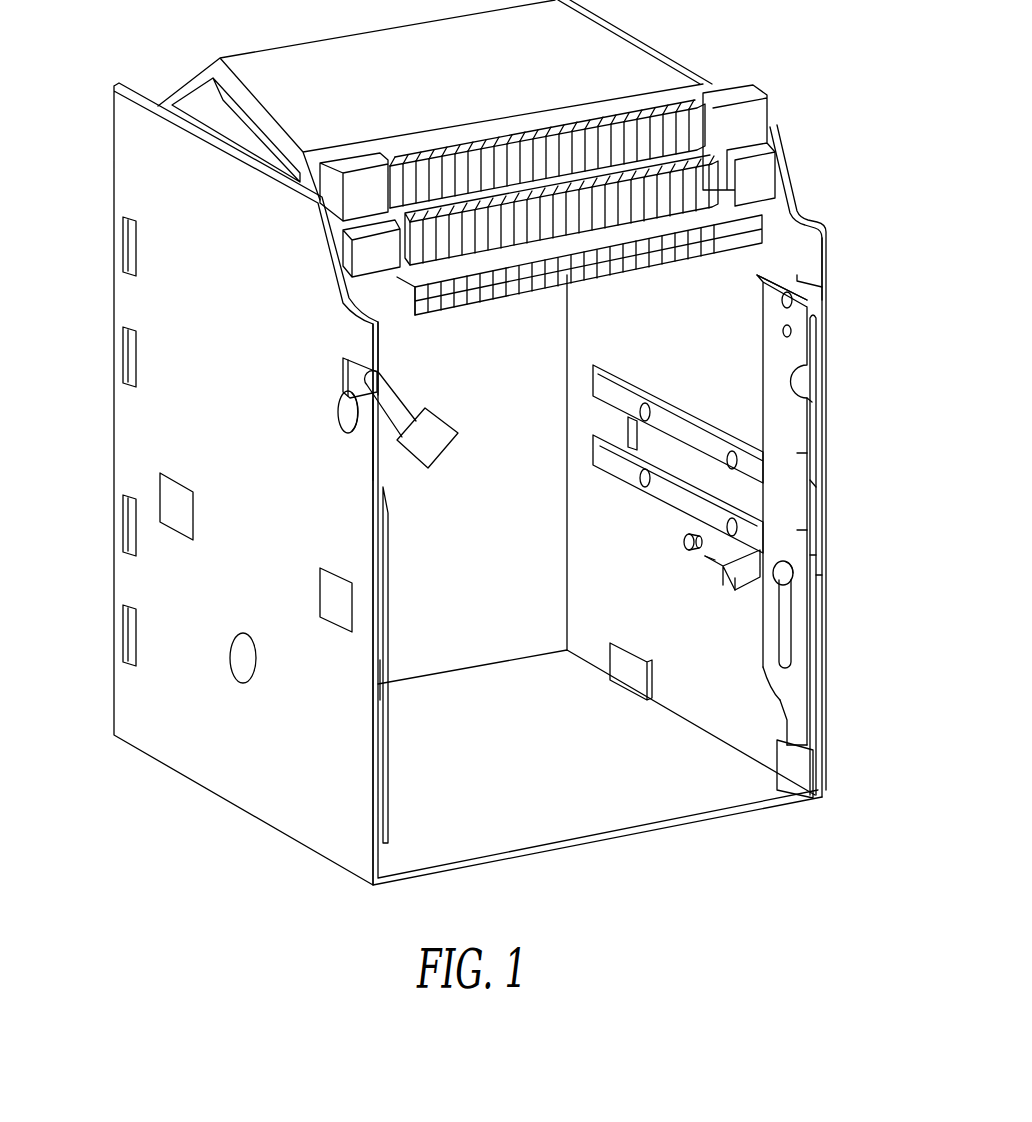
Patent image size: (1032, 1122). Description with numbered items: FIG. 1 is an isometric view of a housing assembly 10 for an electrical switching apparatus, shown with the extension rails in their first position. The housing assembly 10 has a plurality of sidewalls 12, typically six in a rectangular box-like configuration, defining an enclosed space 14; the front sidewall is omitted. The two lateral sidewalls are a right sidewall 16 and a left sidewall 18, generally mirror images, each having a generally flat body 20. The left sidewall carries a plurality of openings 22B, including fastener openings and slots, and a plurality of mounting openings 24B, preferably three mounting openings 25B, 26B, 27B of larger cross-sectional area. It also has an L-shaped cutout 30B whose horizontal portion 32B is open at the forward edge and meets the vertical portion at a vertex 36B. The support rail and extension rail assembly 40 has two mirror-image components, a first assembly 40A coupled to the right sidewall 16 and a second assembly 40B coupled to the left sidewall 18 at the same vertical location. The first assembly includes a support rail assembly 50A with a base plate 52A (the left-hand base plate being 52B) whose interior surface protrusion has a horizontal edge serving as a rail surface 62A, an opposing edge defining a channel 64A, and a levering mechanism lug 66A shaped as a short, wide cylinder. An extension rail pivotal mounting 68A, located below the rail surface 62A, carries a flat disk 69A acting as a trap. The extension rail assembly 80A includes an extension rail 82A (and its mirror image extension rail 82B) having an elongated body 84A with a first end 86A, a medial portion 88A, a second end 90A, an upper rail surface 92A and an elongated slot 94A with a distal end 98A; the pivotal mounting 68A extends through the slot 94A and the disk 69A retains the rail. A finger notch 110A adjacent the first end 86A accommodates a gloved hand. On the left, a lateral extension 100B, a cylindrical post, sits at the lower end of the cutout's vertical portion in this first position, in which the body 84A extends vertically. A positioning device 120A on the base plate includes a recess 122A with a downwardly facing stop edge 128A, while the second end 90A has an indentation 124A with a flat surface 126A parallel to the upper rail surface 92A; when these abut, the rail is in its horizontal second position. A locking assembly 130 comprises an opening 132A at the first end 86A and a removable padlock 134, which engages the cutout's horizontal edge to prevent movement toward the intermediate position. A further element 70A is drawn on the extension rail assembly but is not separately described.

The housing assembly 10 is at (154, 50).
The sidewalls 12 is at (125, 136).
The enclosed space 14 is at (462, 621).
The right sidewall 16 is at (562, 336).
The left sidewall 18 is at (128, 294).
The body 20 is at (190, 396).
The openings 22B is at (100, 511).
The mounting openings 24B is at (142, 470).
The mounting opening 25B is at (186, 510).
The mounting opening 26B is at (243, 660).
The mounting opening 27B is at (332, 592).
The L-shaped cutout 30B is at (303, 390).
The horizontal portion 32B is at (378, 353).
The vertex 36B is at (345, 365).
The support rail and extension rail assembly 40 is at (848, 278).
The first support rail and extension rail assembly 40A is at (845, 551).
The second support rail and extension rail assembly 40B is at (426, 805).
The support rail assembly 50A is at (661, 410).
The base plate 52A is at (817, 578).
The base plate 52B is at (380, 690).
The rail surface 62A is at (632, 455).
The channel 64A is at (678, 460).
The levering mechanism lug 66A is at (684, 542).
The extension rail pivotal mounting 68A is at (793, 590).
The flat disk 69A is at (795, 597).
The latch plate 70A is at (835, 346).
The extension rail assembly 80A is at (835, 395).
The extension rail 82A is at (795, 452).
The extension rail 82B is at (390, 742).
The elongated body 84A is at (797, 495).
The first end 86A is at (810, 303).
The medial portion 88A is at (797, 530).
The second end 90A is at (812, 750).
The upper rail surface 92A is at (777, 350).
The elongated slot 94A is at (778, 637).
The second distal end 98A is at (778, 672).
The lateral extension 100B is at (340, 418).
The finger notch 110A is at (787, 393).
The positioning device 120A is at (644, 583).
The recess 122A is at (750, 567).
The indentation 124A is at (782, 707).
The flat surface 126A is at (797, 732).
The stop edge 128A is at (733, 567).
The locking assembly 130 is at (340, 468).
The opening 132A is at (780, 302).
The padlock 134 is at (432, 450).